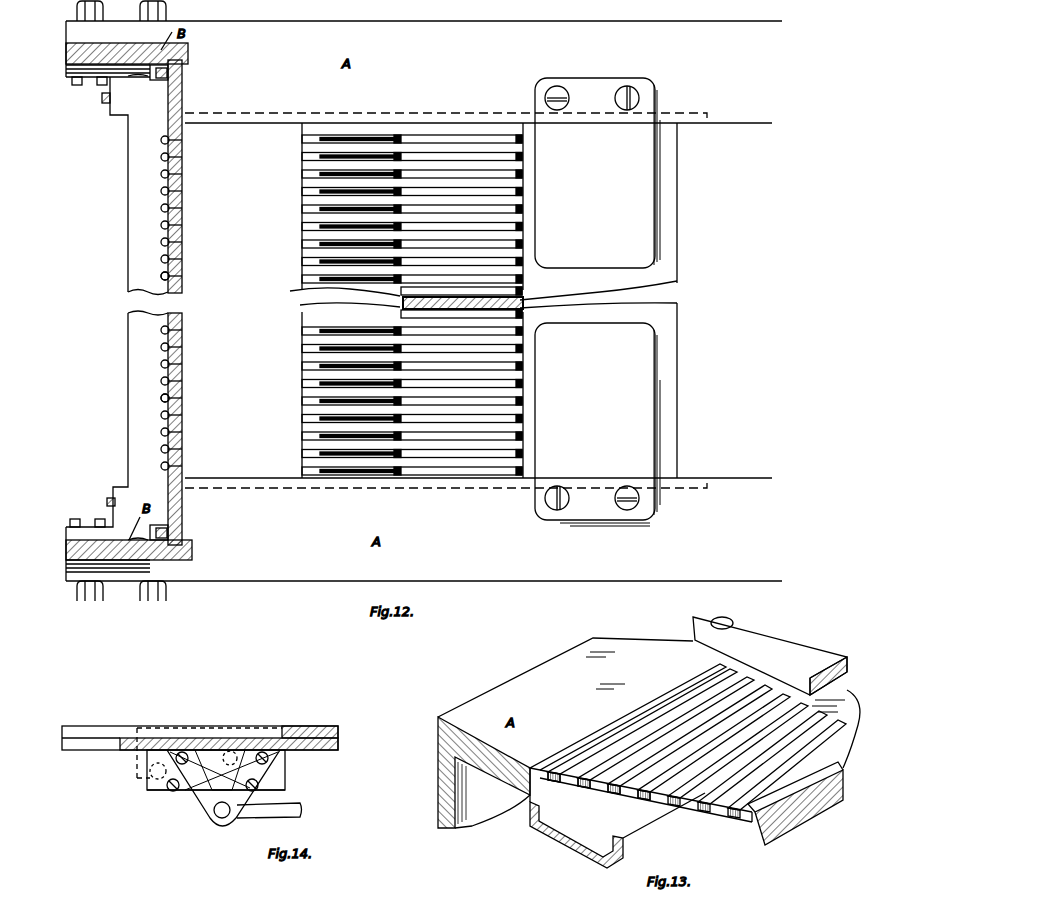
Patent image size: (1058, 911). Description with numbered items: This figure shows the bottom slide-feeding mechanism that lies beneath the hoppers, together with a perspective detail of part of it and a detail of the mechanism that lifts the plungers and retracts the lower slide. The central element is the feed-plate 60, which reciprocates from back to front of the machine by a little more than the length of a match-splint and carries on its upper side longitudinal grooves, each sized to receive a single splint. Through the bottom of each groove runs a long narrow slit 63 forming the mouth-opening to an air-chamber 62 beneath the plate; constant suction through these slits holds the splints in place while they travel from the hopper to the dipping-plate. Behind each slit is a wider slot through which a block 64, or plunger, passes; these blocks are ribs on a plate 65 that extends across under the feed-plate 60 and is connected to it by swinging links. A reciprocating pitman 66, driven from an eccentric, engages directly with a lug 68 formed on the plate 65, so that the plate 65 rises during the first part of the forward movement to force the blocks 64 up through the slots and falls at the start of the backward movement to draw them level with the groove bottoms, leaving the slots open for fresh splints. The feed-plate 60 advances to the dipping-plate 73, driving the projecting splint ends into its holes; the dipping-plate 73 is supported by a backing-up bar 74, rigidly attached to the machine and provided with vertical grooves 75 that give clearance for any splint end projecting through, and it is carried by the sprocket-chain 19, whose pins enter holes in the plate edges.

In FIG. 12, the sprocket-chain 19 is at (176, 80).
In FIG. 12, the feed-plate 60 is at (300, 290).
In FIG. 14, the feed-plate 60 is at (110, 733).
In FIG. 13, the feed-plate 60 is at (564, 756).
In FIG. 13, the air-chamber 62 is at (575, 835).
In FIG. 12, the narrow slit 63 is at (390, 132).
In FIG. 13, the narrow slit 63 is at (628, 802).
In FIG. 12, the block 64 is at (482, 133).
In FIG. 14, the block 64 is at (221, 755).
In FIG. 13, the block 64 is at (763, 696).
In FIG. 12, the plate 65 is at (522, 298).
In FIG. 14, the plate 65 is at (151, 791).
In FIG. 13, the plate 65 is at (788, 828).
In FIG. 14, the reciprocating pitman 66 is at (306, 813).
In FIG. 14, the lug 68 is at (216, 826).
In FIG. 12, the dipping-plate 73 is at (183, 203).
In FIG. 12, the backing-up bar 74 is at (163, 252).
In FIG. 12, the vertical grooves 75 is at (166, 274).